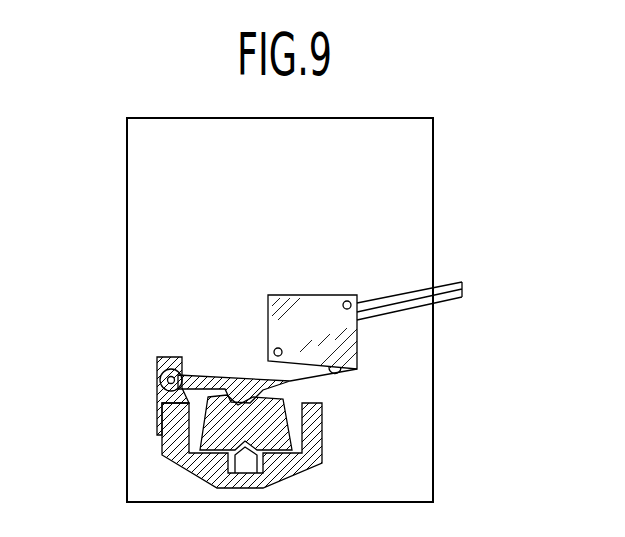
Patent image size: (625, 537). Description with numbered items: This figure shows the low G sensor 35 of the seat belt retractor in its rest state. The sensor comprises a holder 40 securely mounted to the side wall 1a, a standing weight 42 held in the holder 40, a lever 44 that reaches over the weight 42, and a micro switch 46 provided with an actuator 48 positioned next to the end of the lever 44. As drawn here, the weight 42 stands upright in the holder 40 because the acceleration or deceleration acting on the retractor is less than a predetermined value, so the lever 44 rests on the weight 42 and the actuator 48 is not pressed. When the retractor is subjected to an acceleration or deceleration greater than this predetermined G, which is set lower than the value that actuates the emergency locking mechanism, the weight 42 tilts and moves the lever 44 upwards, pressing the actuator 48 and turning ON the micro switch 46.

The side wall 1a is at (138, 204).
The low G sensor 35 is at (250, 316).
The holder 40 is at (172, 450).
The standing weight 42 is at (218, 427).
The lever 44 is at (242, 390).
The micro switch 46 is at (345, 338).
The actuator 48 is at (329, 367).